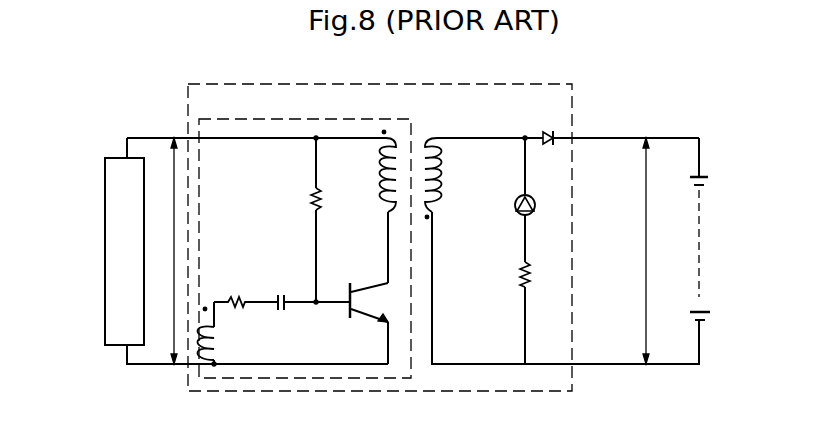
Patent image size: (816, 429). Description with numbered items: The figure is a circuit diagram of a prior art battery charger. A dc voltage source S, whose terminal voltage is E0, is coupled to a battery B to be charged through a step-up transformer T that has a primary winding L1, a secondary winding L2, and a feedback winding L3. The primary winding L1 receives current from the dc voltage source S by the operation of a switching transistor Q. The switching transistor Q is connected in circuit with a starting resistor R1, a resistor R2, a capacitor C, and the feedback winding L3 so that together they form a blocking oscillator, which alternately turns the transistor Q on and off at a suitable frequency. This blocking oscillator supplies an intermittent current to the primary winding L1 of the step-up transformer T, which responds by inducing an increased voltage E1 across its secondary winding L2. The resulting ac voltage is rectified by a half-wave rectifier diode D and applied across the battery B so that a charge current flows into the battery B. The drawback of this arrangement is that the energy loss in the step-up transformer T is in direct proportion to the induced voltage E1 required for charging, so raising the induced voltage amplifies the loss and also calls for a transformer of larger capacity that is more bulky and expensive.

The dc voltage source S is at (105, 216).
The terminal voltage of the dc power source E0 is at (162, 251).
The starting resistor R1 is at (298, 198).
The primary winding L1 is at (372, 171).
The step-up transformer T is at (415, 142).
The secondary winding L2 is at (448, 178).
The half-wave rectifier diode D is at (545, 123).
The voltage induced across the secondary winding E1 is at (634, 251).
The battery B is at (702, 181).
The resistor R2 is at (246, 287).
The capacitor C is at (310, 287).
The feedback winding L3 is at (223, 333).
The switching transistor Q is at (374, 303).